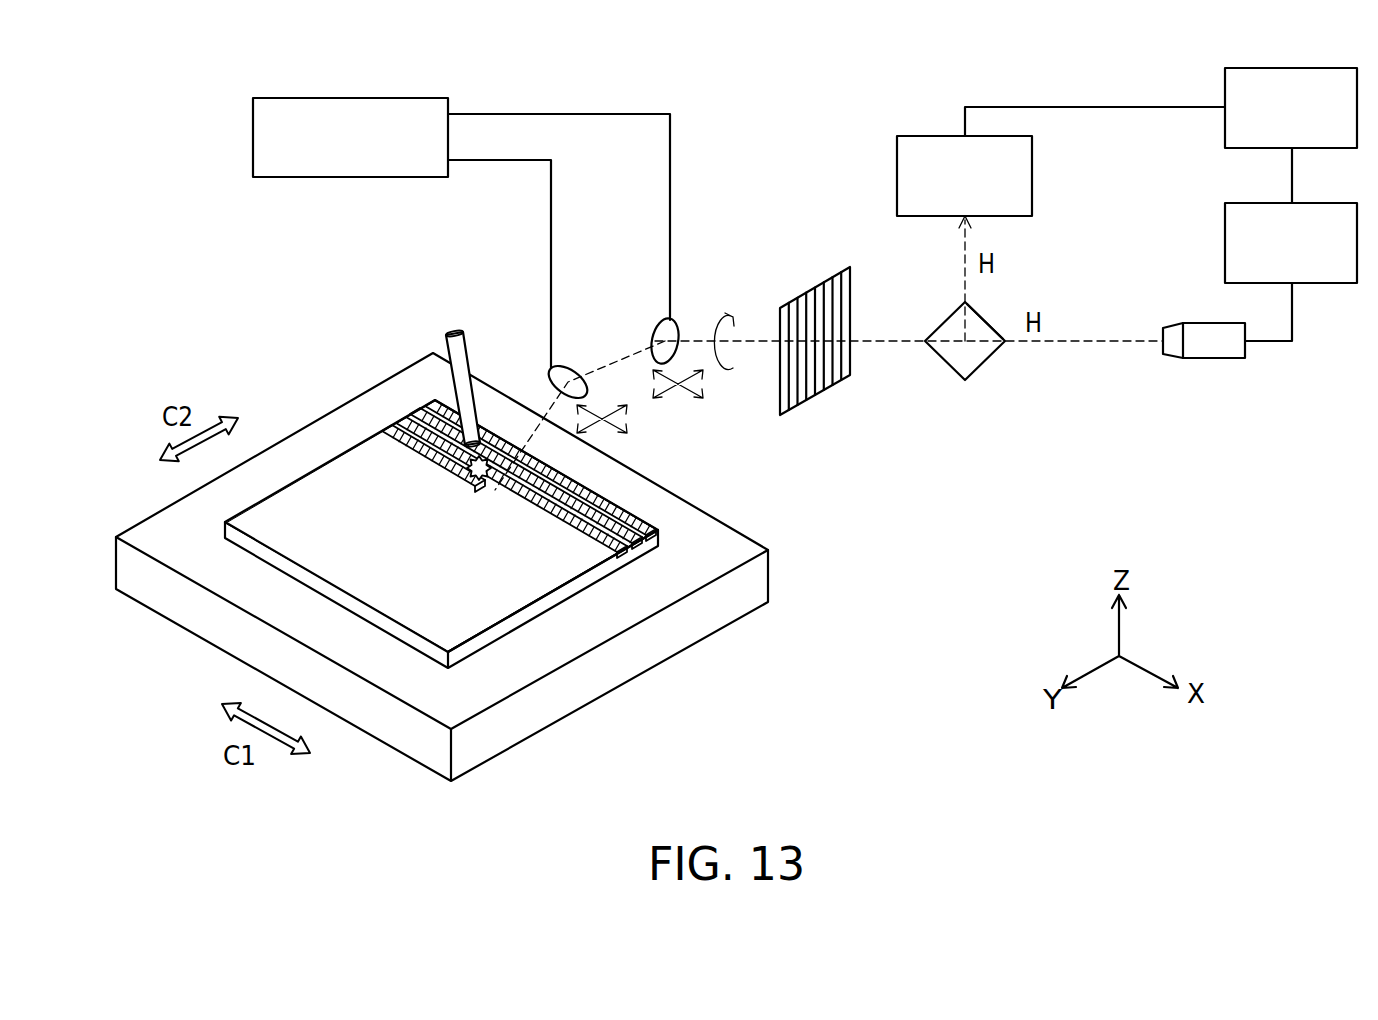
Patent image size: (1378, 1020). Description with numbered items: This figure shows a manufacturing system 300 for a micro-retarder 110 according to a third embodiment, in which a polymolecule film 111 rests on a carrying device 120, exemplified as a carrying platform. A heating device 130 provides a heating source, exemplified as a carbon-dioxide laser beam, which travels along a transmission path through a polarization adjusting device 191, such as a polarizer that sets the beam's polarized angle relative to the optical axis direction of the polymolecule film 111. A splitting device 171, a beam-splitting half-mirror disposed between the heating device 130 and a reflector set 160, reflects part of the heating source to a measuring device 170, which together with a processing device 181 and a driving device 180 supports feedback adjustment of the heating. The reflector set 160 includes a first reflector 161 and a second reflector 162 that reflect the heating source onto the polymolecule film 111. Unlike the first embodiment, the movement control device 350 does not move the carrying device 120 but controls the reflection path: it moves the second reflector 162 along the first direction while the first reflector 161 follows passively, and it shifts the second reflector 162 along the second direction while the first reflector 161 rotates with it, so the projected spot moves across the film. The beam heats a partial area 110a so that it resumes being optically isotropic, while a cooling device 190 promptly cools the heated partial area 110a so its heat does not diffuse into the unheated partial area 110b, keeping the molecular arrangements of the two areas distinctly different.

The manufacturing system 300 is at (143, 89).
The movement control device 350 is at (253, 138).
The reflector set 160 is at (657, 233).
The first reflector 161 is at (653, 327).
The second reflector 162 is at (573, 363).
The cooling device 190 is at (459, 332).
The polarization adjusting device 191 is at (812, 287).
The measuring device 170 is at (897, 174).
The splitting device 171 is at (973, 373).
The processing device 181 is at (1225, 138).
The driving device 180 is at (1225, 241).
The heating device 130 is at (1240, 359).
The carrying device 120 is at (496, 729).
The micro-retarder 110 is at (483, 589).
The polymolecule film 111 is at (499, 601).
The heated partial area 110a is at (618, 550).
The unheated partial area 110b is at (658, 545).